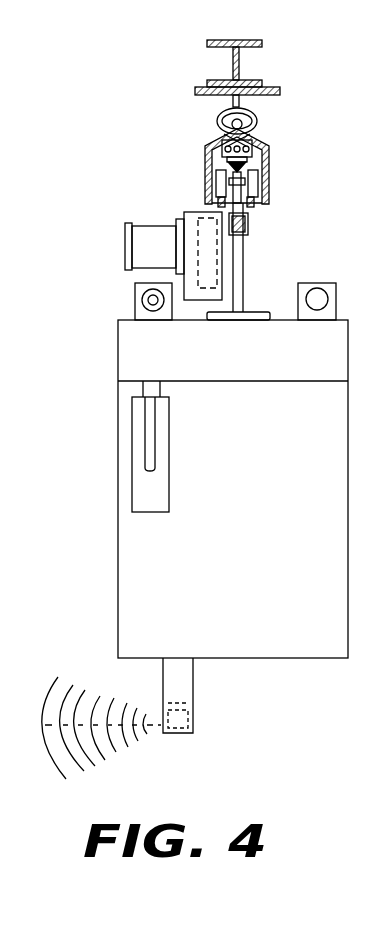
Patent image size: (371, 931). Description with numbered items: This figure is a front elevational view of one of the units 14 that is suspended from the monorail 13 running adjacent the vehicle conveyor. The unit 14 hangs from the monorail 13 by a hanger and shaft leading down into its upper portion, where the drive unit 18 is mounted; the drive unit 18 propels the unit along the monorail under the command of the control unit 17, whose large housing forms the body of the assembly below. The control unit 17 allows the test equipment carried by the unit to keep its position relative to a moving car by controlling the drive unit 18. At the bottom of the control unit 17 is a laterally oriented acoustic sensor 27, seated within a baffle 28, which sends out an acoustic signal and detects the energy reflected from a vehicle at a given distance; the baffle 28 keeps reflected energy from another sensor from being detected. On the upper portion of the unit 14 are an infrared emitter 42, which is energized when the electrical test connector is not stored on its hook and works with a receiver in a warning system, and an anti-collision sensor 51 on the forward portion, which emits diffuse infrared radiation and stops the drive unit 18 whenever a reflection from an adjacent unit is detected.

The monorail 13 is at (272, 178).
The unit 14 is at (256, 285).
The control unit 17 is at (139, 588).
The drive unit 18 is at (148, 232).
The sensor 27 is at (178, 733).
The baffles 28 is at (193, 720).
The infrared emitter 42 is at (141, 298).
The anti-collision sensor 51 is at (320, 288).